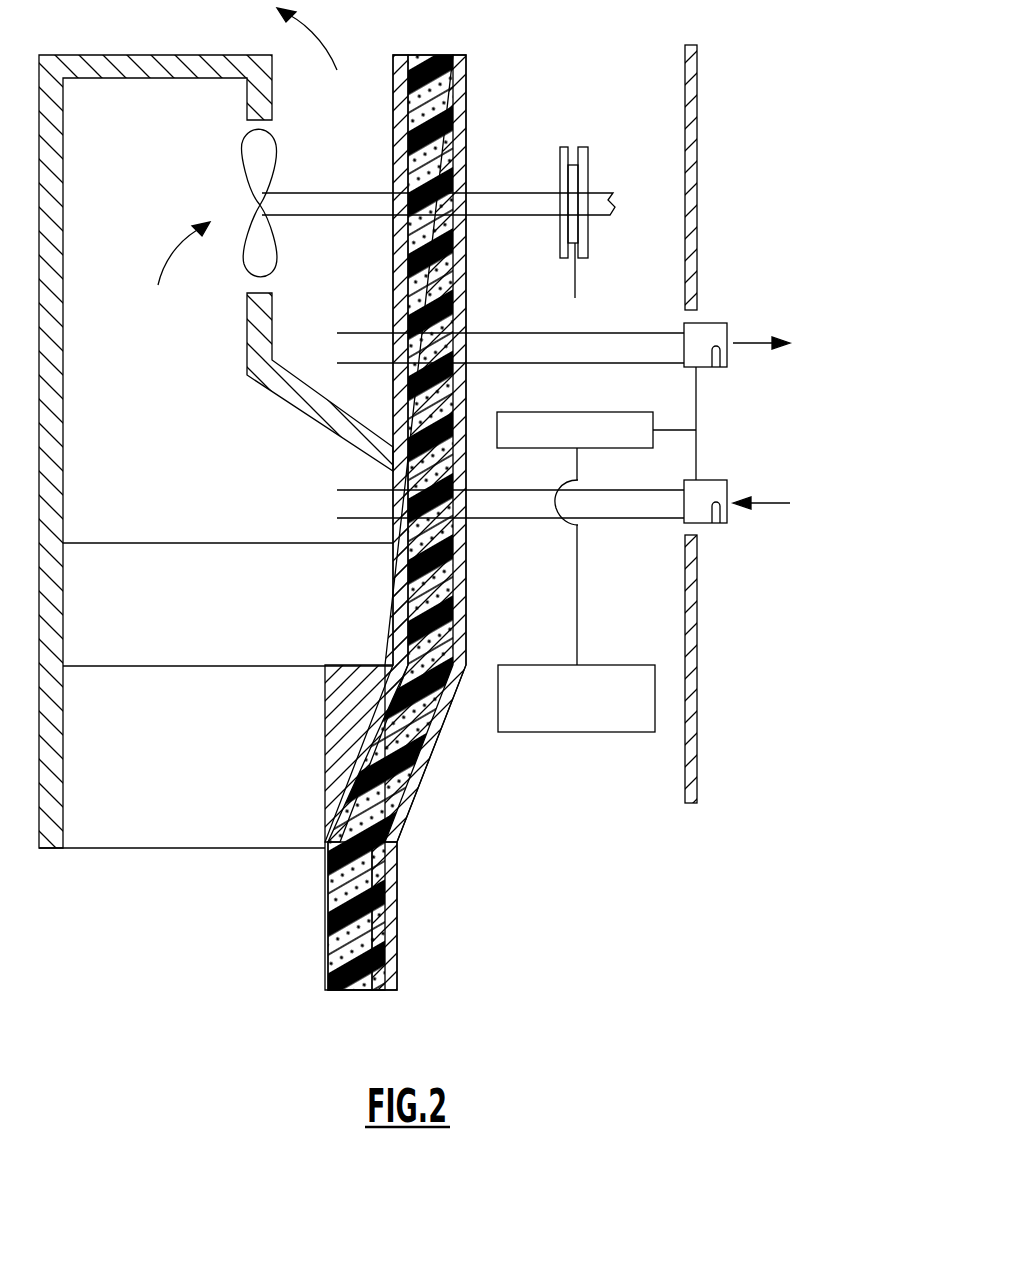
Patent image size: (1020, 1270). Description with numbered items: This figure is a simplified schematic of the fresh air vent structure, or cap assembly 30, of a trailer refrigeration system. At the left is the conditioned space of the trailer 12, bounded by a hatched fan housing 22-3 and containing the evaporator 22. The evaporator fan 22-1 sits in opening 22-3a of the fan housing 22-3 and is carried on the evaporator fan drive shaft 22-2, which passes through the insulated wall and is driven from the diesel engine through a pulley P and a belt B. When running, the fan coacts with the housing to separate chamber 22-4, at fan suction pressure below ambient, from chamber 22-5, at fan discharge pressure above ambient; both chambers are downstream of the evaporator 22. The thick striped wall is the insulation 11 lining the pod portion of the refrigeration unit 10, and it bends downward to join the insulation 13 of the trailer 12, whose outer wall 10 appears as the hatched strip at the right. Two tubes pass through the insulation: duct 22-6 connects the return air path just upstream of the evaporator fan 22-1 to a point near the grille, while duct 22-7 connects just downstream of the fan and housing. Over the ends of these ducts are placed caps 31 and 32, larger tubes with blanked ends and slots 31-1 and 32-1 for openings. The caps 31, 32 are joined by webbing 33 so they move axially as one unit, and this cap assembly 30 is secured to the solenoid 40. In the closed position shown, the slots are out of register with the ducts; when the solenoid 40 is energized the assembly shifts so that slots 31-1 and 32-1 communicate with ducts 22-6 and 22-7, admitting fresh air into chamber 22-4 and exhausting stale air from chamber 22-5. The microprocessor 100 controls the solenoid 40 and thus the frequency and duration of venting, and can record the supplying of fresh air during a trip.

The refrigeration unit 10 is at (697, 675).
The insulation 11 is at (379, 522).
The trailer 12 is at (397, 930).
The insulation 13 is at (325, 925).
The evaporator 22 is at (195, 666).
The evaporator fan 22-1 is at (246, 174).
The evaporator fan drive shaft 22-2 is at (503, 193).
The fan housing 22-3 is at (247, 107).
The opening 22-3a is at (252, 292).
The chamber 22-4 is at (280, 449).
The chamber 22-5 is at (368, 121).
The duct 22-6 is at (590, 520).
The duct 22-7 is at (490, 333).
The cap assembly 30 is at (792, 424).
The cap 31 is at (714, 480).
The slot 31-1 is at (715, 524).
The cap 32 is at (727, 328).
The slot 32-1 is at (714, 367).
The webbing 33 is at (696, 405).
The solenoid 40 is at (544, 412).
The microprocessor 100 is at (586, 732).
The pulley P is at (589, 175).
The belt B is at (576, 283).